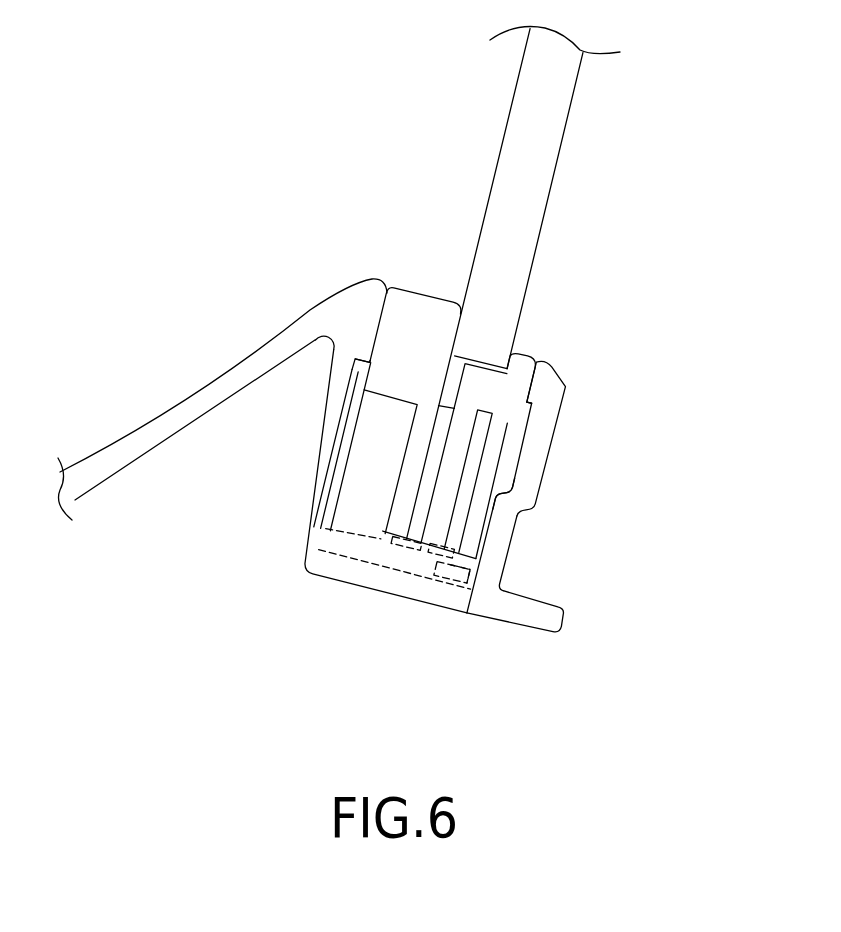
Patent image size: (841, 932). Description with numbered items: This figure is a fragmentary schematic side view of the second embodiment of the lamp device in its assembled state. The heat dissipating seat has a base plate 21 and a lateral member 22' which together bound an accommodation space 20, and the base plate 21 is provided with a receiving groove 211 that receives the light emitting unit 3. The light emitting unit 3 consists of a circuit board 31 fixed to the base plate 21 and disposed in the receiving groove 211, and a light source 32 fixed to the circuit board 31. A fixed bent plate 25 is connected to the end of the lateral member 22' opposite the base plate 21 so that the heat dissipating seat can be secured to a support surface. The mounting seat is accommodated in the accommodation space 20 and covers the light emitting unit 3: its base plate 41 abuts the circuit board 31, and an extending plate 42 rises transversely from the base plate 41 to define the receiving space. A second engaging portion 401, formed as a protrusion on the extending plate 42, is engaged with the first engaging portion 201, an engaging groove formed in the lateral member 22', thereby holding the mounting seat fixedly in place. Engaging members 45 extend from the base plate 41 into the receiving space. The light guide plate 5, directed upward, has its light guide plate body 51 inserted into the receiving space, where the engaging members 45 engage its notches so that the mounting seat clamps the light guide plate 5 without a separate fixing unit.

The light guide plate 5 is at (595, 108).
The light guide plate body 51 is at (518, 113).
The extending plate 42 is at (424, 313).
The second engaging portion 401 is at (363, 370).
The fixed bent plate 25 is at (146, 422).
The lateral member 22' is at (438, 424).
The first engaging portion 201 is at (345, 440).
The accommodation space 20 is at (520, 445).
The engaging member 45 is at (475, 505).
The light emitting unit 3 is at (325, 567).
The base plate 41 is at (387, 553).
The circuit board 31 is at (408, 565).
The light source 32 is at (436, 570).
The receiving groove 211 is at (450, 577).
The base plate 21 is at (528, 618).